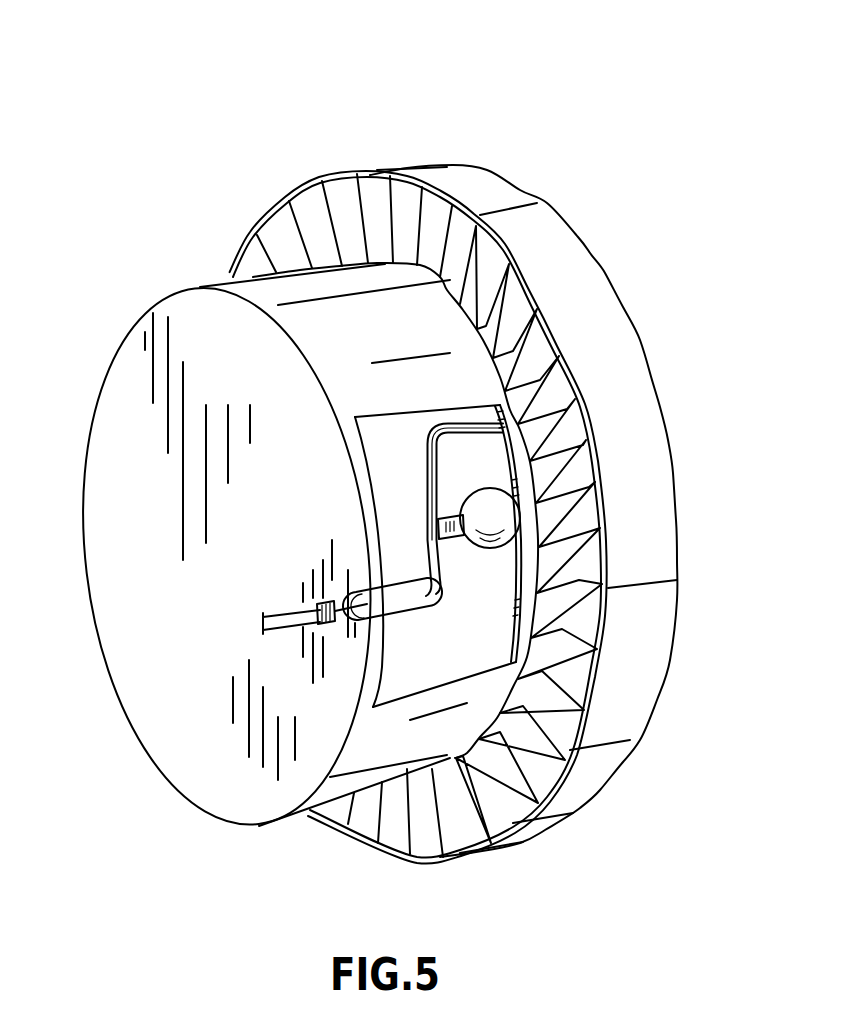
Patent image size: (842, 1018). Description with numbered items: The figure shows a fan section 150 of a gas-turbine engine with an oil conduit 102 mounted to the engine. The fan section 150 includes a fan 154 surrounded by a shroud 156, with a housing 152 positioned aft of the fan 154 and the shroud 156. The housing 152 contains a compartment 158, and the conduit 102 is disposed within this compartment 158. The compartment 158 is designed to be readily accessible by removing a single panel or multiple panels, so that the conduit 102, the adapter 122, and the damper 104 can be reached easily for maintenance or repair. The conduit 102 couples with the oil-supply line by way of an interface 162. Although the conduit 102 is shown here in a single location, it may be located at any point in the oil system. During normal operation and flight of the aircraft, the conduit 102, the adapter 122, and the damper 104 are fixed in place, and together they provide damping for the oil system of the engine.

The fan section 150 is at (658, 131).
The housing 152 is at (258, 287).
The fan 154 is at (533, 340).
The shroud 156 is at (650, 373).
The compartment 158 is at (510, 568).
The interface 162 is at (323, 603).
The conduit 102 is at (405, 602).
The damper 104 is at (480, 497).
The adapter 122 is at (447, 518).